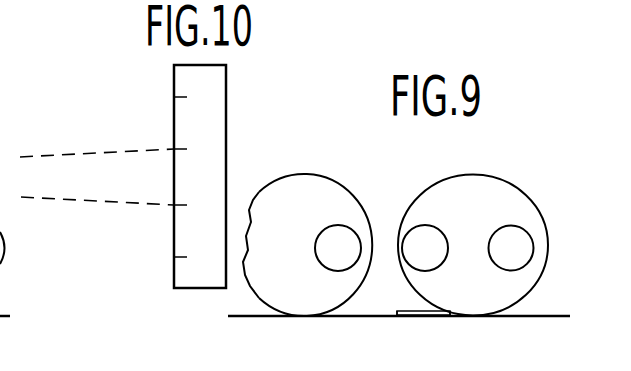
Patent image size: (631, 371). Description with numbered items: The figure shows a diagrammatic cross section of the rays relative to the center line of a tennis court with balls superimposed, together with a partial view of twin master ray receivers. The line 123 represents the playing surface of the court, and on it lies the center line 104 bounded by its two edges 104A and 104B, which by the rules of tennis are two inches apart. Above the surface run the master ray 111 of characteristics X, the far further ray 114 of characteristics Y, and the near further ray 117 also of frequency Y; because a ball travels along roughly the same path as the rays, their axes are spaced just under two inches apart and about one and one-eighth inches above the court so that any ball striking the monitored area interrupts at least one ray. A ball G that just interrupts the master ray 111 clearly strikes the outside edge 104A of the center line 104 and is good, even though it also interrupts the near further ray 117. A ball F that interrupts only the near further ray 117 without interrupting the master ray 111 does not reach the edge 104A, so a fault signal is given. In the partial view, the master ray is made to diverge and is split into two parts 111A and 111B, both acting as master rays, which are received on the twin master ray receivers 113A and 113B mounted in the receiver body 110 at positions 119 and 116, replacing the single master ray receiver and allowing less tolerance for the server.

In FIG. 10, the plate member 110 is at (208, 188).
In FIG. 10, the upper groove 119 is at (185, 97).
In FIG. 10, the twin master ray receiver 113A is at (186, 149).
In FIG. 10, the master ray part 111A is at (56, 153).
In FIG. 10, the master ray part 111B is at (75, 197).
In FIG. 10, the twin master ray receiver 113B is at (172, 206).
In FIG. 10, the lower groove 116 is at (185, 257).
In FIG. 9, the playing surface line 123 is at (552, 317).
In FIG. 9, the ball F is at (287, 176).
In FIG. 9, the near further ray 117 is at (339, 226).
In FIG. 9, the ball G is at (465, 175).
In FIG. 9, the master ray 111 is at (418, 226).
In FIG. 9, the far further ray 114 is at (523, 226).
In FIG. 9, the center line 104 is at (427, 318).
In FIG. 9, the center line edge 104B is at (393, 317).
In FIG. 9, the center line edge 104A is at (450, 318).